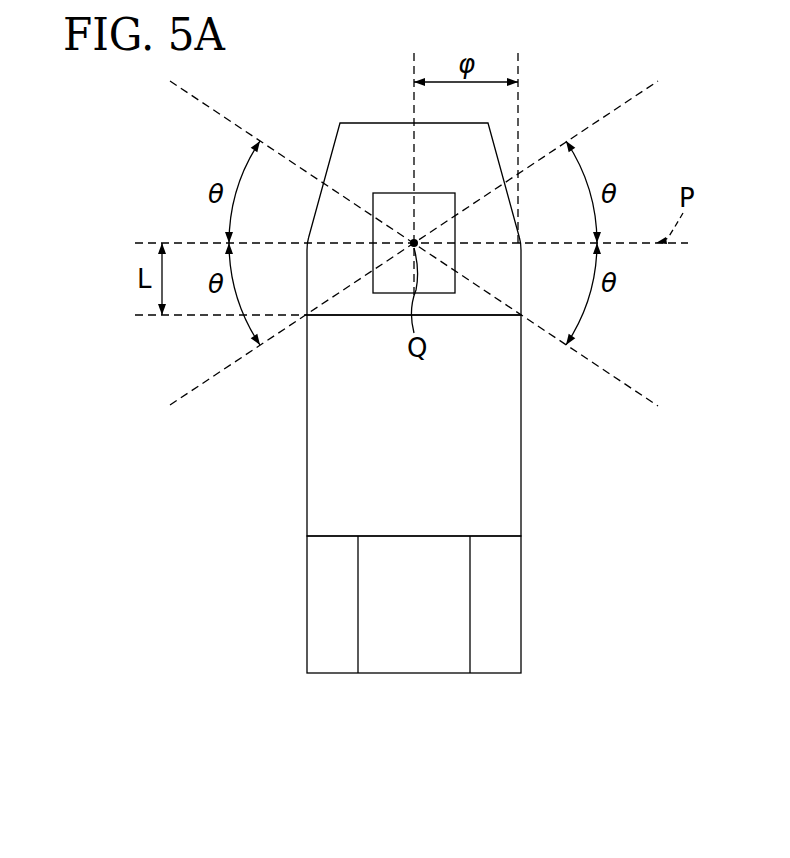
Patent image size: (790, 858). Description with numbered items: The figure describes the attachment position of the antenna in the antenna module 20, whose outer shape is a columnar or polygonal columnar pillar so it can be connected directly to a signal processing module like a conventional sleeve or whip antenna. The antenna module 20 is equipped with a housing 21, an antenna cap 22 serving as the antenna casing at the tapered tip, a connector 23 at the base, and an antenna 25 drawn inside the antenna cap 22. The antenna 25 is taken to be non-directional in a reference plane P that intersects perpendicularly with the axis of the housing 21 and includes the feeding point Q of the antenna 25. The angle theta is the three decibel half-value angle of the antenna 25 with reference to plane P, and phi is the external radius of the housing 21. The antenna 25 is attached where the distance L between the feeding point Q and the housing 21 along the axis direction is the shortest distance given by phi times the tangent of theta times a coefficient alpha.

The antenna module 20 is at (369, 361).
The housing 21 is at (522, 448).
The antenna cap 22 is at (368, 123).
The connector 23 is at (522, 593).
The antenna 25 is at (387, 193).